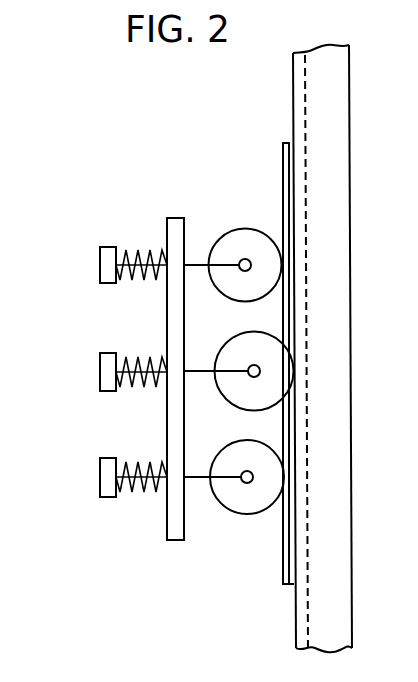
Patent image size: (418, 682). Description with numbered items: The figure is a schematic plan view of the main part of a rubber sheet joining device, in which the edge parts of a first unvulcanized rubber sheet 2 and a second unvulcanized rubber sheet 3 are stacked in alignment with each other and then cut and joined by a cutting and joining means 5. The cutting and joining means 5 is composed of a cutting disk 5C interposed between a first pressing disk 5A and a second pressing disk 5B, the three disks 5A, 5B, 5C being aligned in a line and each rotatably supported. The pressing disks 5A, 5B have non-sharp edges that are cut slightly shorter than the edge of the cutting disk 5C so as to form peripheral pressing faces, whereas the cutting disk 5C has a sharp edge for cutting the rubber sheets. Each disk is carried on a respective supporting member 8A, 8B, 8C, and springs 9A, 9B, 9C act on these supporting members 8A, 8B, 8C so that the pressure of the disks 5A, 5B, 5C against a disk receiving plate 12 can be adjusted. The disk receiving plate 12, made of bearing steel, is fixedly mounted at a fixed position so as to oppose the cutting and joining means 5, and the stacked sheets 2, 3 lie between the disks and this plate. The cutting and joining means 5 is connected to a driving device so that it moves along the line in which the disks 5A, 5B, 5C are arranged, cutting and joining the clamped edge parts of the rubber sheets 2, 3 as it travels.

The first unvulcanized rubber sheet 2 is at (283, 158).
The second unvulcanized rubber sheet 3 is at (290, 143).
The cutting and joining means 5 is at (98, 203).
The first pressing disk 5A is at (239, 229).
The second pressing disk 5B is at (230, 514).
The cutting disk 5C is at (220, 388).
The supporting member 8A is at (100, 256).
The supporting member 8B is at (100, 478).
The supporting member 8C is at (100, 363).
The spring 9A is at (129, 249).
The spring 9B is at (143, 498).
The spring 9C is at (131, 389).
The disk receiving plate 12 is at (308, 165).